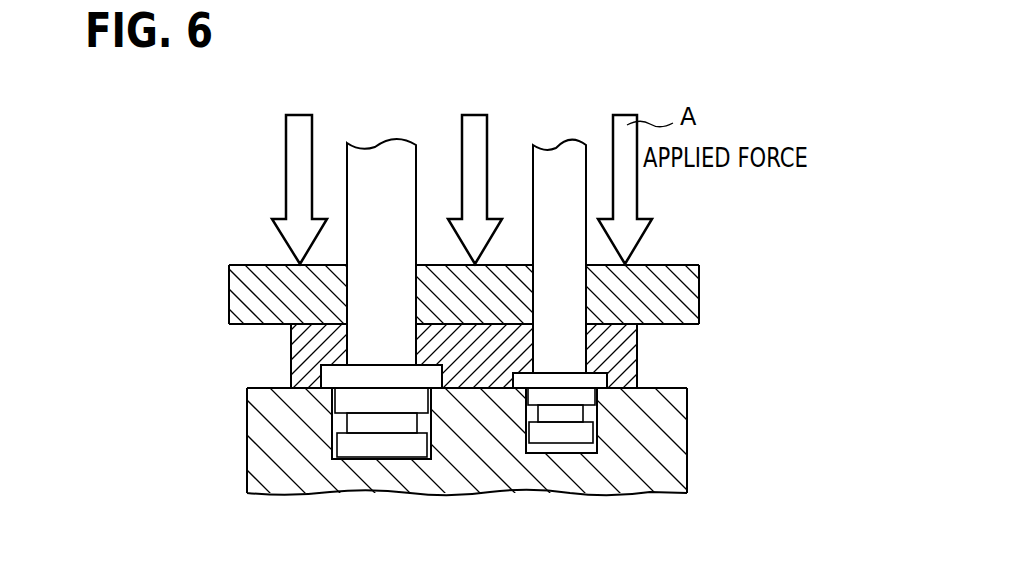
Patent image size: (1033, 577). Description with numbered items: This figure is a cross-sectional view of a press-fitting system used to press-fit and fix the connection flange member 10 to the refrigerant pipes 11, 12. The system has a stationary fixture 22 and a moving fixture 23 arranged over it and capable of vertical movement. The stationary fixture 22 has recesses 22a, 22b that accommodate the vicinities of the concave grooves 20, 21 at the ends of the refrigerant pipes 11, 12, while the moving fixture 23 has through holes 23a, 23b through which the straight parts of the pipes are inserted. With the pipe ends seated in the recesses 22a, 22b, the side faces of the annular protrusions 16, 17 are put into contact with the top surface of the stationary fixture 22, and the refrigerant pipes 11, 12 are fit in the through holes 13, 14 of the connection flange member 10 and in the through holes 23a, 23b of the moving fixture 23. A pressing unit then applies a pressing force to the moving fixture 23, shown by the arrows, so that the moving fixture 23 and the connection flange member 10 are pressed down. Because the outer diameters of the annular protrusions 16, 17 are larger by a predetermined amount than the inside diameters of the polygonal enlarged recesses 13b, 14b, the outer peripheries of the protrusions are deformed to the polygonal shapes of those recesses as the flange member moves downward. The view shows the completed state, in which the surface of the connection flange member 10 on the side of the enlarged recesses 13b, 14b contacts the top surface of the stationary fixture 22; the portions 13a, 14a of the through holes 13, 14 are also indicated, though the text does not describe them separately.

The connection flange member 10 is at (288, 368).
The refrigerant pipe 11 is at (345, 177).
The refrigerant pipe 12 is at (531, 177).
The through hole 13 is at (150, 297).
The upper layer of first sheet member 13a is at (293, 337).
The polygonal enlarged recess 13b is at (293, 368).
The through hole 14 is at (790, 325).
The upper layer of second sheet member 14a is at (622, 334).
The polygonal enlarged recess 14b is at (622, 368).
The annular protrusion 16 is at (335, 378).
The annular protrusion 17 is at (512, 379).
The concave groove 20 is at (378, 425).
The concave groove 21 is at (557, 418).
The stationary fixture 22 is at (687, 455).
The recess 22a is at (338, 423).
The recess 22b is at (593, 413).
The moving fixture 23 is at (683, 266).
The through hole 23a is at (320, 284).
The through hole 23b is at (613, 290).